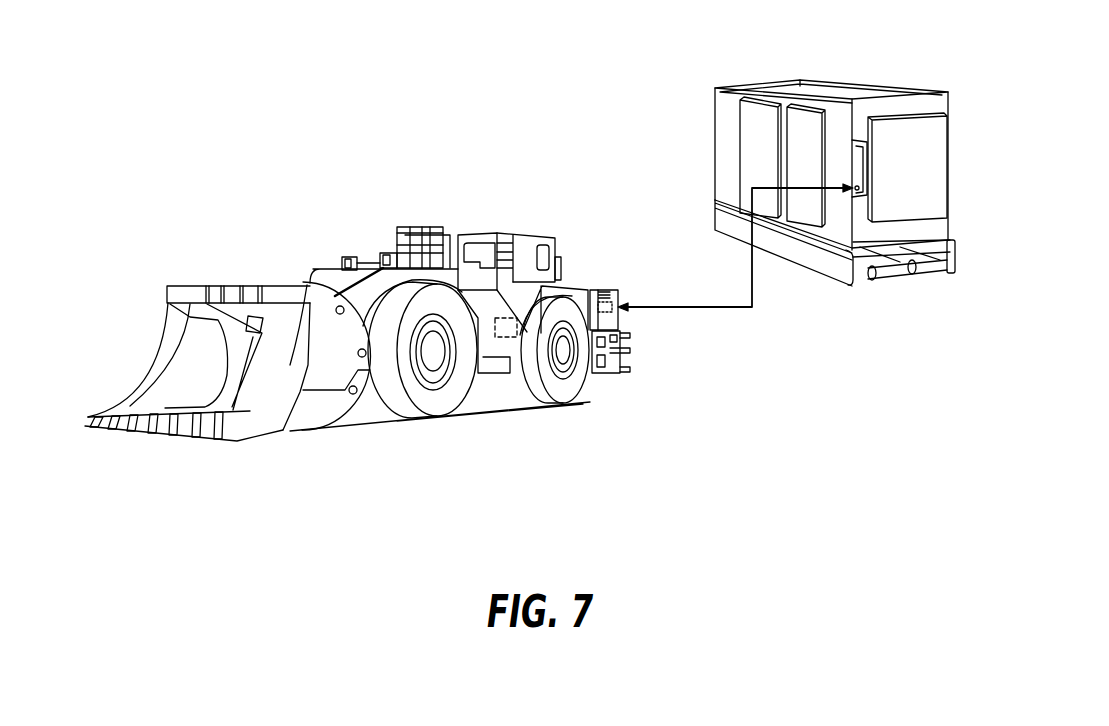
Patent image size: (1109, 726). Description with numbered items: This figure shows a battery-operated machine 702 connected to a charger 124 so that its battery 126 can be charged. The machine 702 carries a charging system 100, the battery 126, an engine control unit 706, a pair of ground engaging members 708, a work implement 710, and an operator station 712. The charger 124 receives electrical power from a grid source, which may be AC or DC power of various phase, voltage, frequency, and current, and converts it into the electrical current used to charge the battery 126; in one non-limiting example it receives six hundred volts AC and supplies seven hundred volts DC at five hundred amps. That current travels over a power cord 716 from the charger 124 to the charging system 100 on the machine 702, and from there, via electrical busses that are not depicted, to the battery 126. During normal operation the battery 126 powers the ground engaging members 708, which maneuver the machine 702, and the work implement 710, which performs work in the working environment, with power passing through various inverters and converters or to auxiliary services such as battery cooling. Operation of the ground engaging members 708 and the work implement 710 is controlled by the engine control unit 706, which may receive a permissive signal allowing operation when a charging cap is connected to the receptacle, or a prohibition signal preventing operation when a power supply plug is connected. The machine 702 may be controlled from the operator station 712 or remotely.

The charging system 100 is at (603, 298).
The charger 124 is at (948, 133).
The battery 126 is at (627, 375).
The battery-operated machine 702 is at (324, 262).
The engine control unit 706 is at (498, 340).
The ground engaging members 708 is at (434, 418).
The work implement 710 is at (180, 285).
The operator station 712 is at (527, 247).
The power cord 716 is at (758, 296).